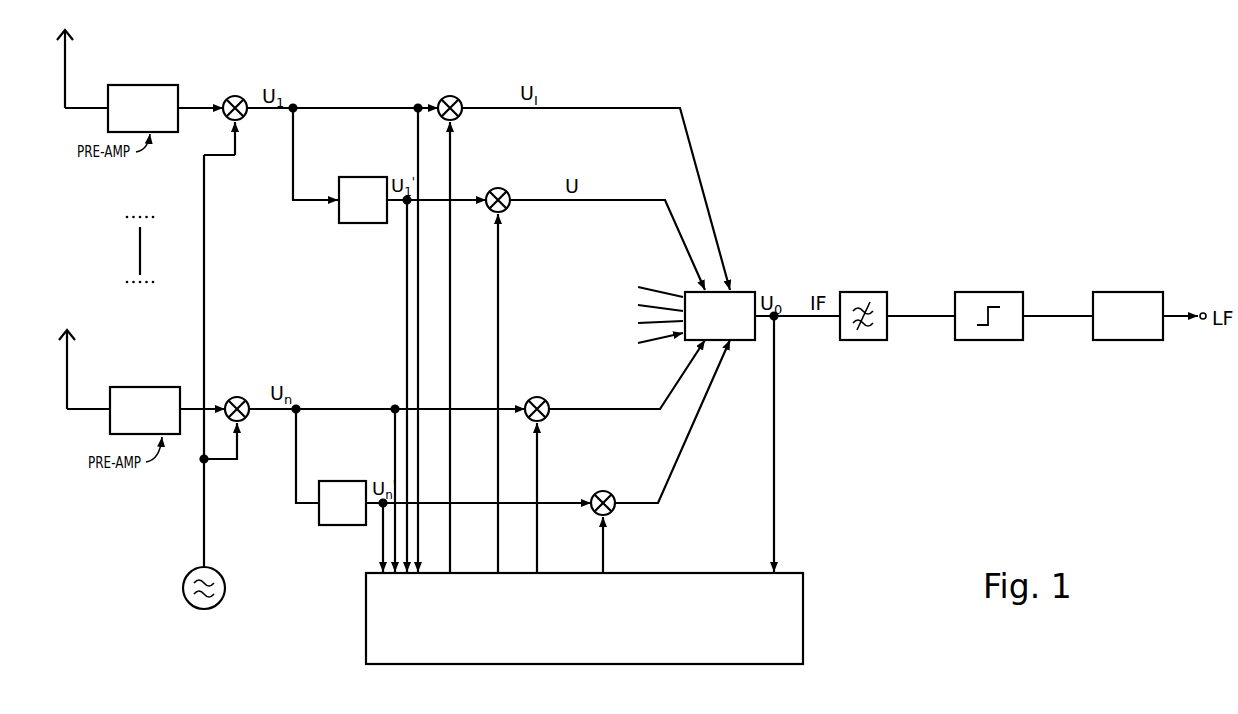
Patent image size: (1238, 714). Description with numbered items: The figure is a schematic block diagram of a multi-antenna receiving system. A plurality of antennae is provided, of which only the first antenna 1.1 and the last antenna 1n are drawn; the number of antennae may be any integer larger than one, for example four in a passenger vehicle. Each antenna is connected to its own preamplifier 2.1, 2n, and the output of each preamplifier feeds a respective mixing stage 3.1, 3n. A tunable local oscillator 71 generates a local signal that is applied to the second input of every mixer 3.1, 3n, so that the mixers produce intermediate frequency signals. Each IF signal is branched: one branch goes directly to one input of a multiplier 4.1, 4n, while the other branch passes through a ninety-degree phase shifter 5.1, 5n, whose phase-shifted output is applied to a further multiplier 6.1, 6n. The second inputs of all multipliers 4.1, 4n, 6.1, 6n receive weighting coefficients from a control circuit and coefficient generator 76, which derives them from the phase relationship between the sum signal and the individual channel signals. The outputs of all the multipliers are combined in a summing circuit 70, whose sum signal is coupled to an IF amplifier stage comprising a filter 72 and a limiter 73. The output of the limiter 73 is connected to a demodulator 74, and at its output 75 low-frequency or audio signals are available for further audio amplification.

The antenna 1.1 is at (82, 69).
The preamplifier 2.1 is at (165, 95).
The mixing stage 3.1 is at (240, 114).
The multiplier 4.1 is at (453, 94).
The 90° phase shifter 5.1 is at (363, 188).
The further multiplier 6.1 is at (502, 187).
The antenna 1n is at (84, 369).
The preamplifier 2n is at (167, 398).
The mixing stage 3n is at (226, 416).
The multiplier 4n is at (538, 395).
The 90° phase shifter 5n is at (342, 488).
The further multiplier 6n is at (605, 491).
The summing circuit 70 is at (700, 303).
The tunable local oscillator 71 is at (214, 576).
The filter 72 is at (863, 303).
The limiter 73 is at (989, 303).
The demodulator 74 is at (1128, 303).
The output 75 is at (1188, 338).
The control circuit and coefficient generator 76 is at (584, 606).